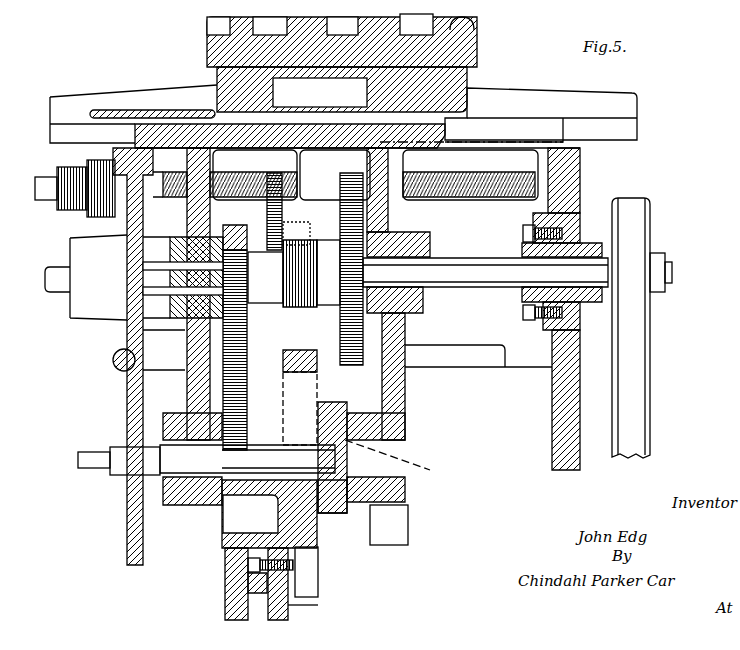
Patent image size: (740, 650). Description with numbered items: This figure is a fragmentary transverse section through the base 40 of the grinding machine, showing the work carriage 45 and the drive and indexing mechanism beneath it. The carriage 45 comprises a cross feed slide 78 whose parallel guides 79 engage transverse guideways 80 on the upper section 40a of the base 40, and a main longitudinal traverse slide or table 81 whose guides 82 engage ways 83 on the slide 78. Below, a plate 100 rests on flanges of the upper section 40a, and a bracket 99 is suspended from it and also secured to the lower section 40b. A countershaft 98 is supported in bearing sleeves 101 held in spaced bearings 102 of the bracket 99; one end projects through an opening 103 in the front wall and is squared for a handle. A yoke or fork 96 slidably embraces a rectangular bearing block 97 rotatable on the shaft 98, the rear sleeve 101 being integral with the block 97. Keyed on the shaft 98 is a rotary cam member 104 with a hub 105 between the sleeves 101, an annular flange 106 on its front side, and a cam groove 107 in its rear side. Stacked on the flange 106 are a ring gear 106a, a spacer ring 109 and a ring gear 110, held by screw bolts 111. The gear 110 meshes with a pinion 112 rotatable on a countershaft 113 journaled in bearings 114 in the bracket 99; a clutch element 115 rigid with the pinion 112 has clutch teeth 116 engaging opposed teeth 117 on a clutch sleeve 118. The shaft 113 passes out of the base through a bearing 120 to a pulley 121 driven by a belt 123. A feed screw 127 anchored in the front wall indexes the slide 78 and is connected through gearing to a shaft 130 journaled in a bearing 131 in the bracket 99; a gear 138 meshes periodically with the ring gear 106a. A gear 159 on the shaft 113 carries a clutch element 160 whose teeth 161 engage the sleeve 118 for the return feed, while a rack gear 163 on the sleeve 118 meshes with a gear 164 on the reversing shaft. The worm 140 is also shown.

The base 40 is at (120, 356).
The upper section of the base 40a is at (540, 310).
The lower section of the base 40b is at (492, 309).
The work carriage 45 is at (206, 24).
The cross feed slide 78 is at (612, 100).
The parallel guides 79 is at (635, 128).
The transverse guideways 80 is at (546, 130).
The main longitudinal traverse slide or table 81 is at (478, 27).
The guides 82 is at (215, 50).
The ways 83 is at (470, 92).
The yoke or fork 96 is at (335, 550).
The rectangular bearing block 97 is at (396, 458).
The countershaft 98 is at (400, 447).
The bracket 99 is at (405, 345).
The plate 100 is at (465, 126).
The bearing sleeves 101 is at (160, 430).
The bearings 102 is at (185, 405).
The opening 103 is at (128, 480).
The rotary cam member 104 is at (350, 16).
The hub 105 is at (222, 510).
The annular flange 106 is at (225, 553).
The ring gear 106a is at (290, 607).
The cam groove 107 is at (318, 580).
The spacer ring 109 is at (230, 588).
The ring gear 110 is at (248, 580).
The screw bolts 111 is at (280, 555).
The pinion 112 is at (180, 265).
The countershaft 113 is at (495, 268).
The bearings 114 is at (430, 240).
The clutch element 115 is at (178, 292).
The clutch teeth 116 is at (240, 230).
The clutch teeth 117 is at (255, 322).
The clutch sleeve 118 is at (292, 290).
The bearing 120 is at (598, 225).
The pulley 121 is at (660, 220).
The belt 123 is at (650, 362).
The feed screw 127 is at (500, 182).
The shaft 130 is at (55, 285).
The bearing 131 is at (90, 318).
The gear 138 is at (300, 176).
The worm 140 is at (278, 172).
The gear 159 is at (395, 330).
The clutch element 160 is at (365, 232).
The teeth 161 is at (365, 270).
The longitudinal rack gear 163 is at (303, 238).
The gear 164 is at (290, 205).